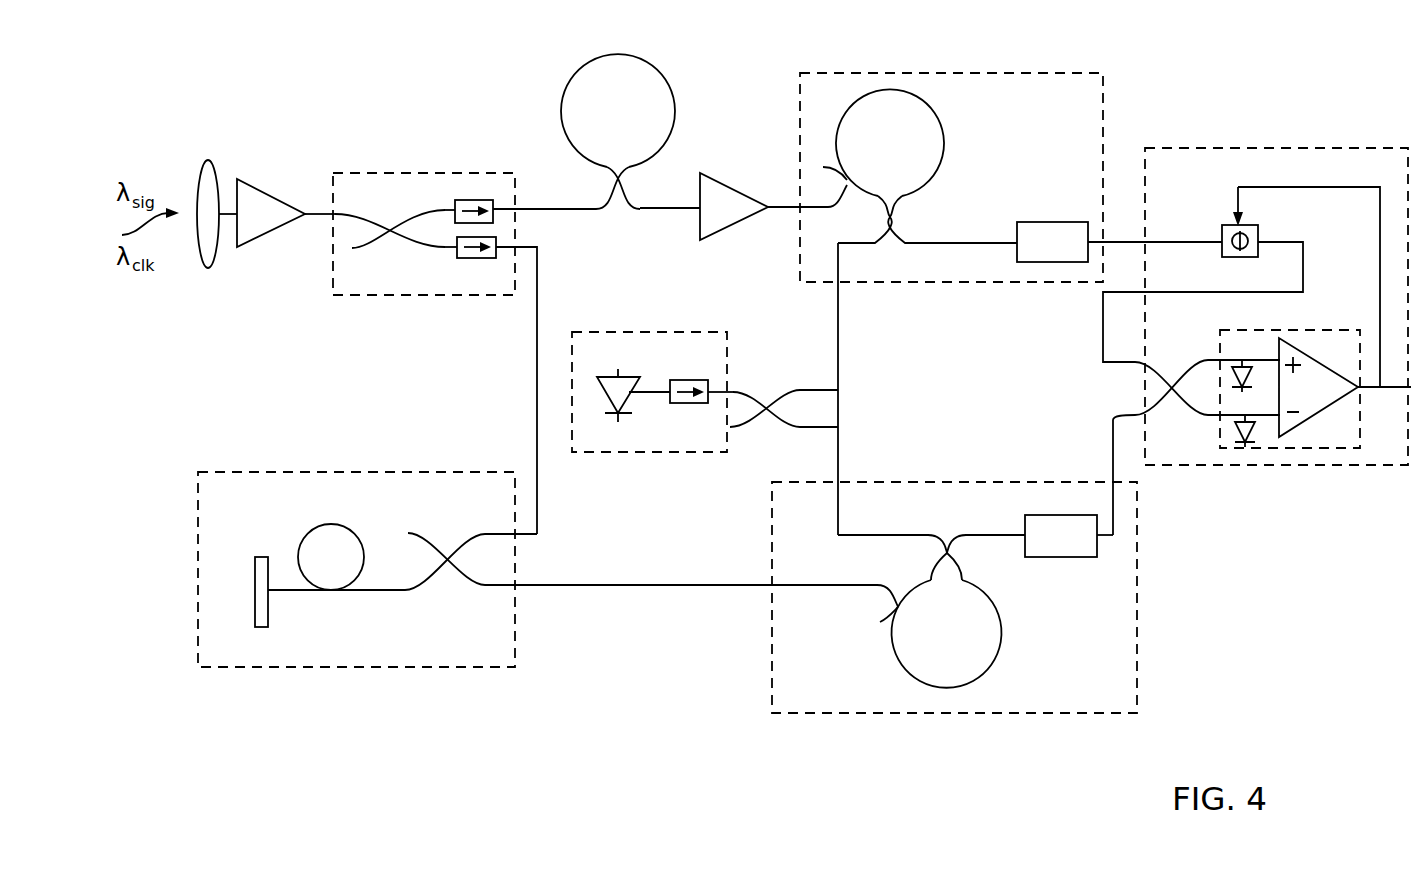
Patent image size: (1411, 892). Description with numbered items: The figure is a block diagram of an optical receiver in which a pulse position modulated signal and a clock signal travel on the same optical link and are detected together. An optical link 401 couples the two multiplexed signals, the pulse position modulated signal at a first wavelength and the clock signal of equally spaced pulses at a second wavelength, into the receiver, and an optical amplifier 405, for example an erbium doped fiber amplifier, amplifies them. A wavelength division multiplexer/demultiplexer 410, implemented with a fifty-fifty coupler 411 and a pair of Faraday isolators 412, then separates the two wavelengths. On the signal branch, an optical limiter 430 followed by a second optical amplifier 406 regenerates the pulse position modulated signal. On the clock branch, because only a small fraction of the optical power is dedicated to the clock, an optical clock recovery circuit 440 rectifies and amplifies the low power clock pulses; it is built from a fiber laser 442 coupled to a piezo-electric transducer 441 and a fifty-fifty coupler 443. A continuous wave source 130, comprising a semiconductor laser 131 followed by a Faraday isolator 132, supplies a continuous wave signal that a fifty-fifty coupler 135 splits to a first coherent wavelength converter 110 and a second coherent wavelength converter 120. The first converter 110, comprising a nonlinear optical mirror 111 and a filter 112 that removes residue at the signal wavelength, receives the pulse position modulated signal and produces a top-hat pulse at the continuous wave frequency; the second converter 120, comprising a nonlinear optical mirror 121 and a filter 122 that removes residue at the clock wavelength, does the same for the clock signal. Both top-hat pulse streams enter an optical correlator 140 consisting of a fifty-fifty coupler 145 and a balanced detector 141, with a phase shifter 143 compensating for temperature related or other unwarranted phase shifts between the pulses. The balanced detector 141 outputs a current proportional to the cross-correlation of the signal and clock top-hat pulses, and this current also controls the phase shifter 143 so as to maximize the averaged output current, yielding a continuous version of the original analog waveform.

The optical link 401 is at (210, 157).
The optical amplifier 405 is at (272, 194).
The wavelength division multiplexer/demultiplexer 410 is at (402, 173).
The 50/50 coupler 411 is at (390, 232).
The Faraday isolators 412 is at (466, 200).
The optical limiter 430 is at (618, 57).
The optical amplifier 406 is at (740, 190).
The first coherent wavelength converter 110 is at (1005, 73).
The nonlinear optical mirror 111 is at (940, 120).
The filter 112 is at (1052, 222).
The optical correlator 140 is at (1233, 146).
The phase shifter 143 is at (1260, 236).
The balanced detector 141 is at (1307, 330).
The 50/50 coupler 145 is at (1170, 388).
The continuous wave source 130 is at (655, 332).
The semiconductor laser 131 is at (622, 377).
The Faraday isolator 132 is at (690, 380).
The 50/50 coupler 135 is at (768, 408).
The second coherent wavelength converter 120 is at (1022, 713).
The nonlinear optical mirror 121 is at (1003, 640).
The filter 122 is at (1080, 558).
The optical clock recovery circuit 440 is at (314, 472).
The piezo-electric transducer 441 is at (255, 576).
The fiber laser 442 is at (345, 525).
The 50/50 coupler 443 is at (450, 565).